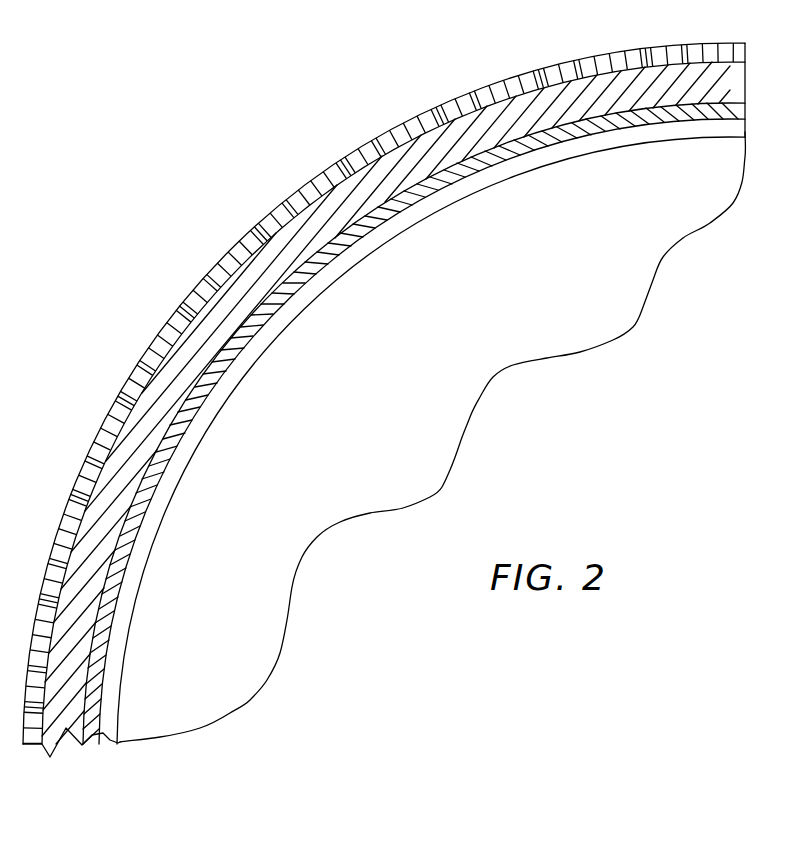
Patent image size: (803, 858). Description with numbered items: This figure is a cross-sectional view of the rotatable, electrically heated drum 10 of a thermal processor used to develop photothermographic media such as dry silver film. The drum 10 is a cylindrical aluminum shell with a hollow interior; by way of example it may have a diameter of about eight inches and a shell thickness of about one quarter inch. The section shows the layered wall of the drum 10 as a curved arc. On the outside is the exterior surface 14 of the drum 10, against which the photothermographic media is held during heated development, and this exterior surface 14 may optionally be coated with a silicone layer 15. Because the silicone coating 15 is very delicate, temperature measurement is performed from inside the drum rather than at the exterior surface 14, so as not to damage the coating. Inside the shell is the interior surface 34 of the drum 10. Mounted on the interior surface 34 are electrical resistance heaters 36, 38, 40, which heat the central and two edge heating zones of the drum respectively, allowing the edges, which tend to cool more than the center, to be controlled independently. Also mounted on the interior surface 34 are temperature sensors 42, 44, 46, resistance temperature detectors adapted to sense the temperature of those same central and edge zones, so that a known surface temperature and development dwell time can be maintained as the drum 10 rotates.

The drum 10 is at (275, 180).
The exterior surface 14 is at (180, 307).
The silicone layer 15 is at (463, 100).
The interior surface 34 is at (140, 478).
The electrical resistance heater 36 is at (414, 423).
The electrical resistance heater 38 is at (414, 423).
The electrical resistance heater 40 is at (225, 356).
The temperature sensor 42 is at (431, 440).
The temperature sensor 44 is at (431, 440).
The temperature sensor 46 is at (453, 200).